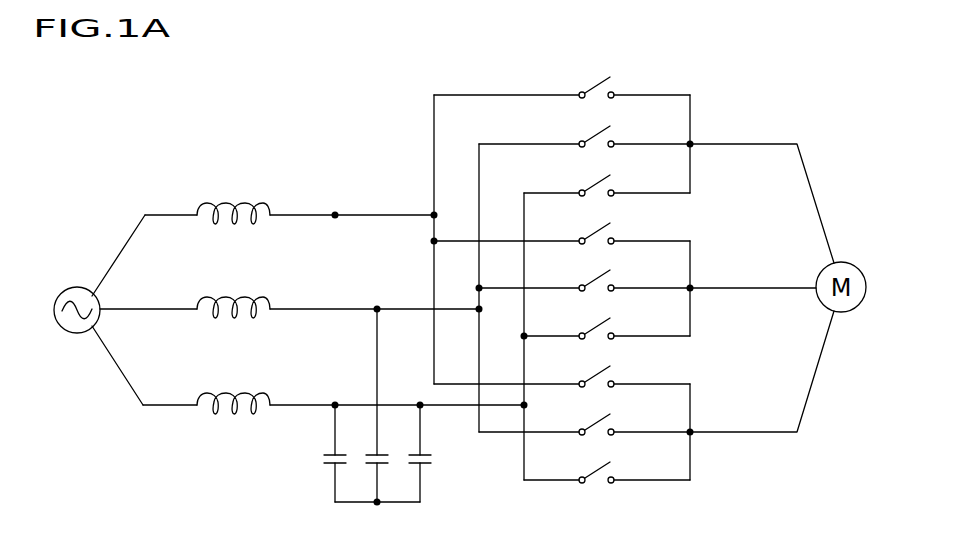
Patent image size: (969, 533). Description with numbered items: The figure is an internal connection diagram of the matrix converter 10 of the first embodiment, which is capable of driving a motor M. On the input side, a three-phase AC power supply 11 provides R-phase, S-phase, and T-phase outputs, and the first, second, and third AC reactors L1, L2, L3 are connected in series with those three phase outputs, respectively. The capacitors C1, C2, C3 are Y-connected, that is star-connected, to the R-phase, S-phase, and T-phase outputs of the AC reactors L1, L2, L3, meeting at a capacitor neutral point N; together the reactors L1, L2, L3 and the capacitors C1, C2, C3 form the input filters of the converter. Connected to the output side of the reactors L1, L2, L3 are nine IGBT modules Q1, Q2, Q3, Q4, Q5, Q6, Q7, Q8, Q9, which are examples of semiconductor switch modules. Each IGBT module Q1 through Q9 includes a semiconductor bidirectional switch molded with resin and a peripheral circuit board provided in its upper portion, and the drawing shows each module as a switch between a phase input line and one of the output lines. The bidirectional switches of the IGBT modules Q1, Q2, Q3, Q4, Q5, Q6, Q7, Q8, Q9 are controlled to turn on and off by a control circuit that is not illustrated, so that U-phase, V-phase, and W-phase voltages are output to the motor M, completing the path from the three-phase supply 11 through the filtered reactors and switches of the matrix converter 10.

The matrix converter 10 is at (272, 147).
The three-phase AC power supply 11 is at (68, 287).
The first AC reactor L1 is at (202, 200).
The second AC reactor L2 is at (202, 294).
The third AC reactor L3 is at (202, 390).
The capacitor C1 is at (330, 448).
The capacitor C2 is at (372, 448).
The capacitor C3 is at (425, 448).
The IGBT module Q1 is at (597, 85).
The IGBT module Q2 is at (597, 134).
The IGBT module Q3 is at (597, 183).
The IGBT module Q4 is at (597, 231).
The IGBT module Q5 is at (597, 278).
The IGBT module Q6 is at (597, 326).
The IGBT module Q7 is at (597, 374).
The IGBT module Q8 is at (597, 422).
The IGBT module Q9 is at (597, 470).